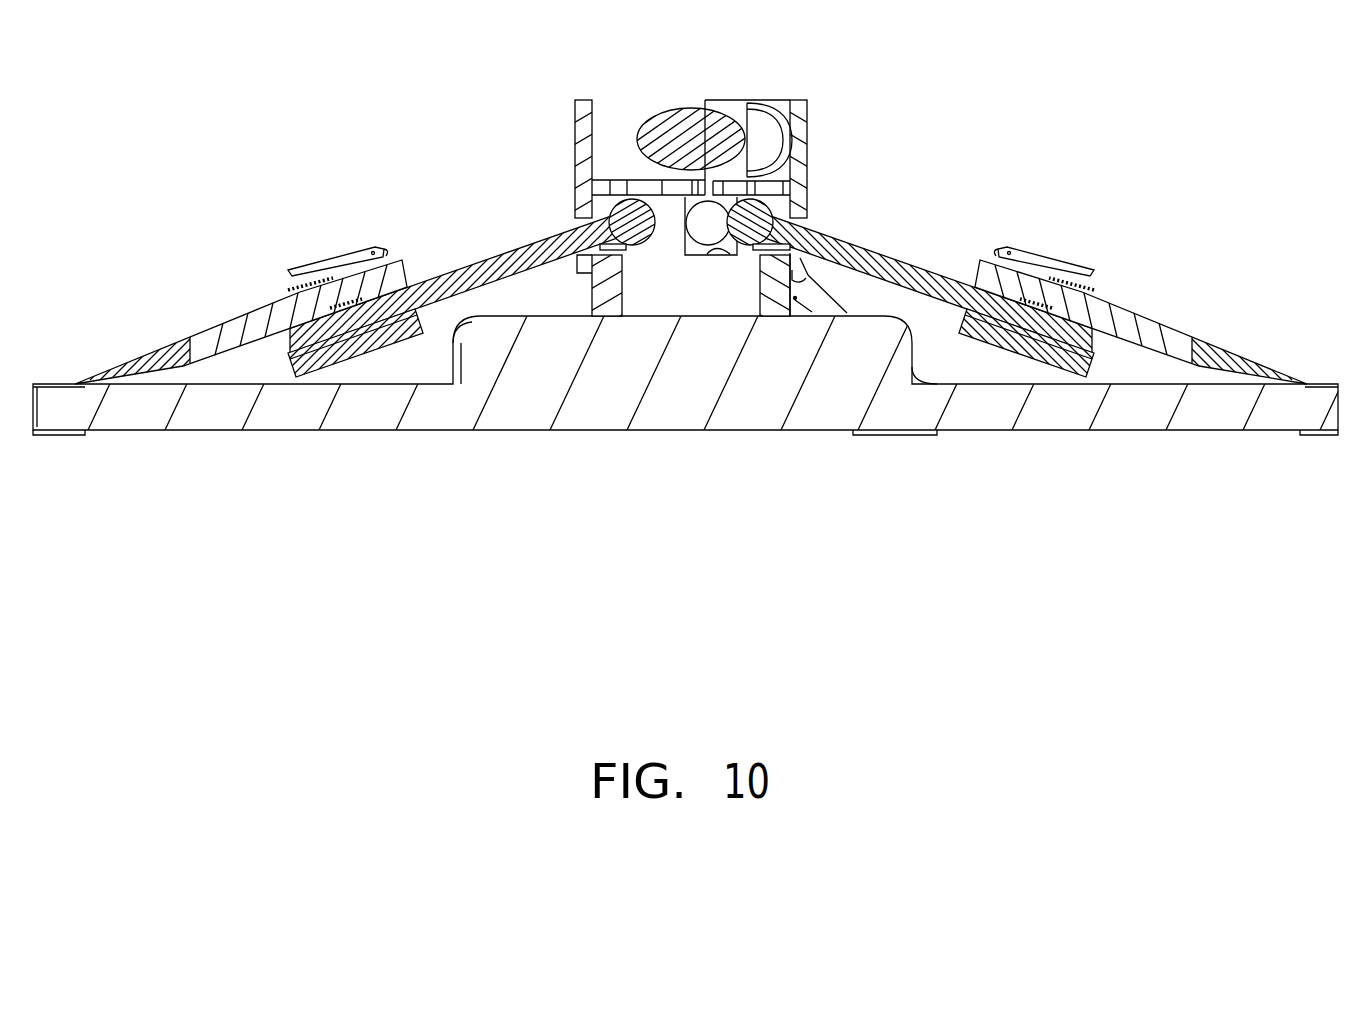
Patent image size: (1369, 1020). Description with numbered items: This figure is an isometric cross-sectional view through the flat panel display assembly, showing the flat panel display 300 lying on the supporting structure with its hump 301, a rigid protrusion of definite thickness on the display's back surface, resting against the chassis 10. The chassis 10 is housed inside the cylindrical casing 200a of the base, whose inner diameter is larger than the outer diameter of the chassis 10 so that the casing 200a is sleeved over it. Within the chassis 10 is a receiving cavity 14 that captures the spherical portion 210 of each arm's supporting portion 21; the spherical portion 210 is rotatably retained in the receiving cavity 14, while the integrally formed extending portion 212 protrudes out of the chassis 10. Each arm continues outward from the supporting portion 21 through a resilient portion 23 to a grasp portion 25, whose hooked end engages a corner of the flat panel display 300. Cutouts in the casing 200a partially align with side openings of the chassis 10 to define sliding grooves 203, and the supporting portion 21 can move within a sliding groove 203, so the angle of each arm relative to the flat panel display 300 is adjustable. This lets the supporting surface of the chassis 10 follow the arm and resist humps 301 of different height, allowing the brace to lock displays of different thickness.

The chassis 10 is at (775, 292).
The receiving cavity 14 is at (714, 293).
The supporting portion 21 is at (495, 272).
The resilient portion 23 is at (316, 240).
The grasp portion 25 is at (220, 318).
The casing 200a is at (585, 130).
The sliding groove 203 is at (597, 247).
The spherical portion 210 is at (762, 207).
The extending portion 212 is at (822, 262).
The flat panel display 300 is at (690, 401).
The hump 301 is at (588, 386).